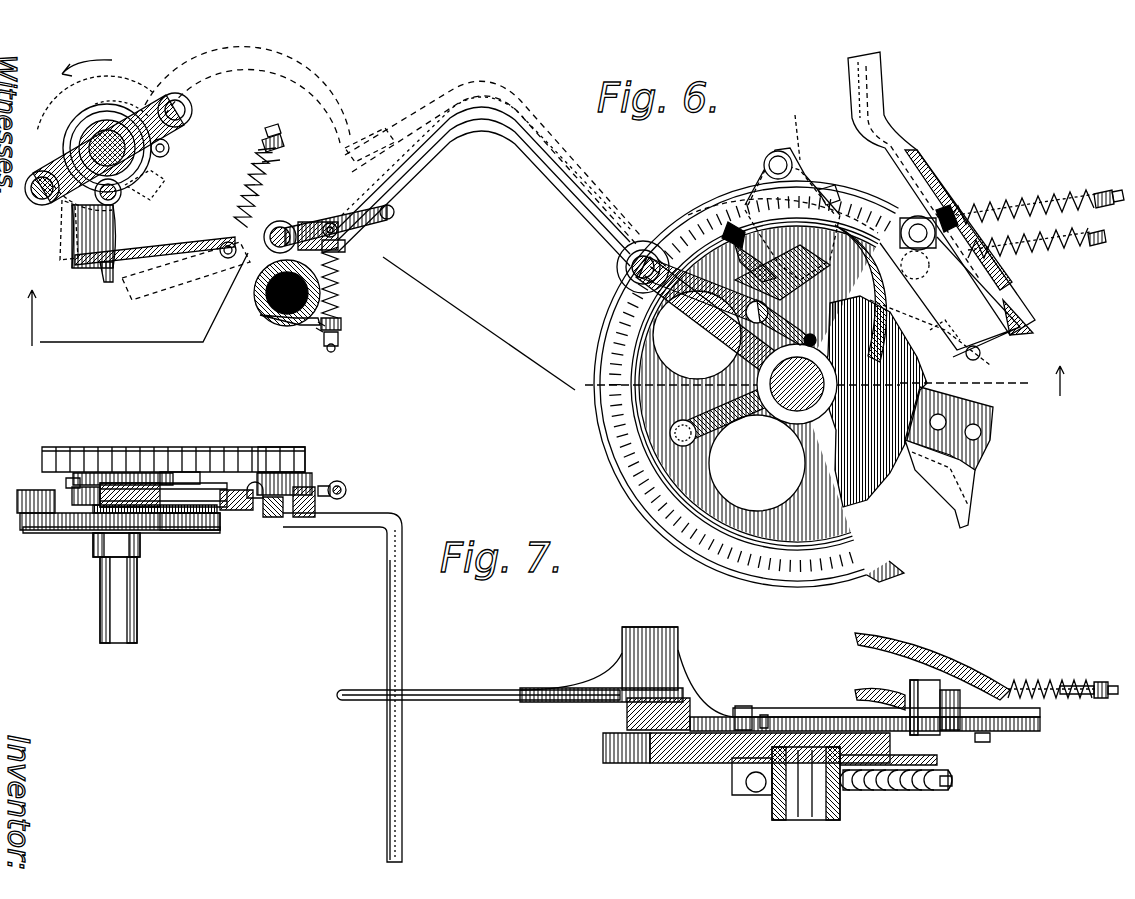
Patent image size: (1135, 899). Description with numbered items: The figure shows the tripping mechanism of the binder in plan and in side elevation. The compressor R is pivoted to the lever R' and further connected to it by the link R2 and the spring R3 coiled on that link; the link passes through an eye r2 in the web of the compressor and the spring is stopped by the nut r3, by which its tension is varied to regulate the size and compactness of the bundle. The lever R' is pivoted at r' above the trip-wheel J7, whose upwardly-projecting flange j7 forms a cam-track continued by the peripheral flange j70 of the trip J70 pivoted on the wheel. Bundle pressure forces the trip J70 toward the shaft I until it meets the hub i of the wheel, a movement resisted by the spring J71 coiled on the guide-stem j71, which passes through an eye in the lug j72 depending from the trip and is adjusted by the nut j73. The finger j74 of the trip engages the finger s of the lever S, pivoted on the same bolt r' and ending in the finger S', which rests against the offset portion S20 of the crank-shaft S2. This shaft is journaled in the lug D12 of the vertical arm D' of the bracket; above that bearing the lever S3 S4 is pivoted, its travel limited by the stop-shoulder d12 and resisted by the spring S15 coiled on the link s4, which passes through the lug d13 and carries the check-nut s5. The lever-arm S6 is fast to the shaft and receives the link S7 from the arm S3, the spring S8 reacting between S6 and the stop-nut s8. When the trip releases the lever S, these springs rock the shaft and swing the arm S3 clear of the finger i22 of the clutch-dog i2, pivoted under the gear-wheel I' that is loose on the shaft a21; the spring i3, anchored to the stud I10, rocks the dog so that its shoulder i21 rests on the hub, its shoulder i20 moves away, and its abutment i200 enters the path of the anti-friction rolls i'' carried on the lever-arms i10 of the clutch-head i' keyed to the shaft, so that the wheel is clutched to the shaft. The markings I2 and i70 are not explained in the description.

In FIG. 6, the stud I10 is at (170, 122).
In FIG. 6, the clutch-head i' is at (107, 127).
In FIG. 7, the clutch-head i' is at (120, 537).
In FIG. 6, the spring i3 is at (102, 112).
In FIG. 7, the spring i3 is at (76, 478).
In FIG. 6, the shoulder i20 is at (75, 130).
In FIG. 6, the lever-arms i10 is at (161, 102).
In FIG. 7, the lever-arms i10 is at (170, 472).
In FIG. 6, the anti-friction roll i'' is at (125, 142).
In FIG. 7, the anti-friction roll i'' is at (27, 497).
In FIG. 6, the shaft a21 is at (158, 158).
In FIG. 7, the shaft a21 is at (138, 622).
In FIG. 6, the shoulder i21 is at (150, 192).
In FIG. 6, the clutch-dog i2 is at (94, 236).
In FIG. 7, the clutch-dog i2 is at (118, 482).
In FIG. 6, the finger i22 is at (104, 276).
In FIG. 6, the lever-arm S3 is at (188, 244).
In FIG. 7, the lever-arm S3 is at (163, 532).
In FIG. 6, the lever-arm S6 is at (240, 205).
In FIG. 7, the lever-arm S6 is at (255, 486).
In FIG. 6, the stop-nut s8 is at (273, 140).
In FIG. 6, the spring S8 is at (276, 168).
In FIG. 6, the link S7 is at (310, 222).
In FIG. 7, the link S7 is at (232, 512).
In FIG. 6, the lever-arm S4 is at (330, 222).
In FIG. 7, the lever-arm S4 is at (318, 478).
In FIG. 6, the lug D12 is at (281, 221).
In FIG. 7, the lug D12 is at (270, 518).
In FIG. 6, the offsetting portion S20 is at (392, 218).
In FIG. 7, the offsetting portion S20 is at (388, 634).
In FIG. 6, the stop-shoulder d12 is at (346, 246).
In FIG. 7, the stop-shoulder d12 is at (306, 486).
In FIG. 6, the spring S15 is at (340, 262).
In FIG. 6, the link s4 is at (342, 322).
In FIG. 7, the link s4 is at (348, 492).
In FIG. 6, the check-nut s5 is at (338, 342).
In FIG. 6, the lug d13 is at (322, 326).
In FIG. 6, the vertical arm D' is at (280, 301).
In FIG. 6, the finger S' is at (489, 173).
In FIG. 7, the finger S' is at (510, 709).
In FIG. 6, the lever S is at (643, 243).
In FIG. 7, the lever S is at (626, 672).
In FIG. 6, the pivot bolt r' is at (783, 329).
In FIG. 7, the pivot bolt r' is at (623, 714).
In FIG. 6, the shaft I is at (720, 360).
In FIG. 6, the hub i is at (797, 409).
In FIG. 6, the finger j74 is at (748, 318).
In FIG. 7, the finger j74 is at (742, 704).
In FIG. 6, the flange j7 is at (610, 420).
In FIG. 7, the flange j7 is at (604, 745).
In FIG. 6, the trip-wheel J7 is at (864, 386).
In FIG. 7, the trip-wheel J7 is at (690, 765).
In FIG. 6, the compressor R is at (941, 193).
In FIG. 7, the compressor R is at (932, 684).
In FIG. 6, the lever R' is at (854, 267).
In FIG. 7, the lever R' is at (865, 700).
In FIG. 6, the eye r2 is at (946, 210).
In FIG. 7, the eye r2 is at (984, 742).
In FIG. 6, the spring R3 is at (988, 210).
In FIG. 7, the spring R3 is at (1016, 682).
In FIG. 6, the link R2 is at (1060, 224).
In FIG. 7, the link R2 is at (1066, 684).
In FIG. 6, the nut r3 is at (1098, 202).
In FIG. 7, the nut r3 is at (1100, 700).
In FIG. 6, the trip J70 is at (730, 225).
In FIG. 7, the trip J70 is at (772, 770).
In FIG. 6, the lug j72 is at (735, 228).
In FIG. 7, the lug j72 is at (752, 796).
In FIG. 6, the pin i70 is at (805, 136).
In FIG. 6, the peripheral flange j70 is at (830, 190).
In FIG. 6, the adjusting-nut j73 is at (940, 320).
In FIG. 7, the gear-wheel I' is at (161, 457).
In FIG. 7, the rack end I2 is at (264, 462).
In FIG. 7, the abutment i200 is at (72, 490).
In FIG. 7, the crank-shaft S2 is at (366, 528).
In FIG. 7, the finger s is at (764, 712).
In FIG. 7, the spring J71 is at (924, 790).
In FIG. 7, the guide-stem j71 is at (952, 788).